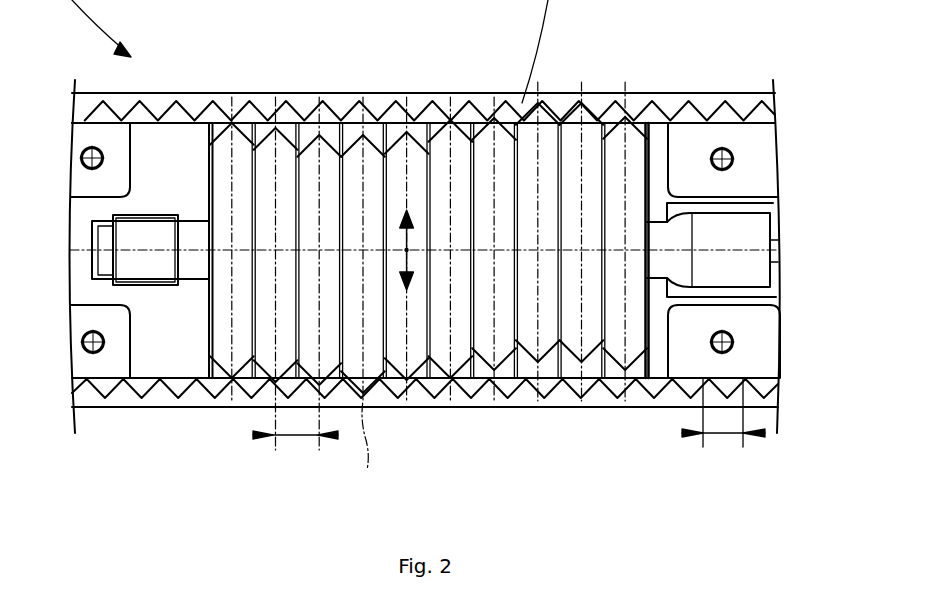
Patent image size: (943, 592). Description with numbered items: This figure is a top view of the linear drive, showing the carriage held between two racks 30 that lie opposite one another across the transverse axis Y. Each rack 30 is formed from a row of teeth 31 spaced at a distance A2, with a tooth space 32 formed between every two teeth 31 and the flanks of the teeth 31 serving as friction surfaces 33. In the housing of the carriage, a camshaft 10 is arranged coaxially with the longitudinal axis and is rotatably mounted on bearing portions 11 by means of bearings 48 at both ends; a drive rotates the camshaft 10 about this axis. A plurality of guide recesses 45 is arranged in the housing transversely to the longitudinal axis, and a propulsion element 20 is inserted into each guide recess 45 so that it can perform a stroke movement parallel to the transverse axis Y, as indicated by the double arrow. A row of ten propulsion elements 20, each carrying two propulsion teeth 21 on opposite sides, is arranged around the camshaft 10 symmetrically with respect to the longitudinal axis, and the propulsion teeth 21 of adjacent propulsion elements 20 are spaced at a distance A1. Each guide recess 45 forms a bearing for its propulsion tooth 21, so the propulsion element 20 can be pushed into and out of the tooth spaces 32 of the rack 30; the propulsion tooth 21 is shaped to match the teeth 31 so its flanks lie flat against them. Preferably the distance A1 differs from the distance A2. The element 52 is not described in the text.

The camshaft 10 is at (193, 237).
The bearing portion 11 is at (720, 233).
The propulsion element 20 is at (358, 132).
The propulsion tooth 21 is at (618, 132).
The rack 30 is at (480, 397).
The tooth 31 is at (270, 117).
The tooth space 32 is at (433, 395).
The friction surface 33 is at (167, 362).
The guide recess 45 is at (420, 128).
The bearing 48 is at (153, 200).
The fastening screw 52 is at (760, 148).
The distance between propulsion teeth A1 is at (287, 435).
The distance between rack teeth A2 is at (718, 433).
The transverse axis Y is at (369, 297).